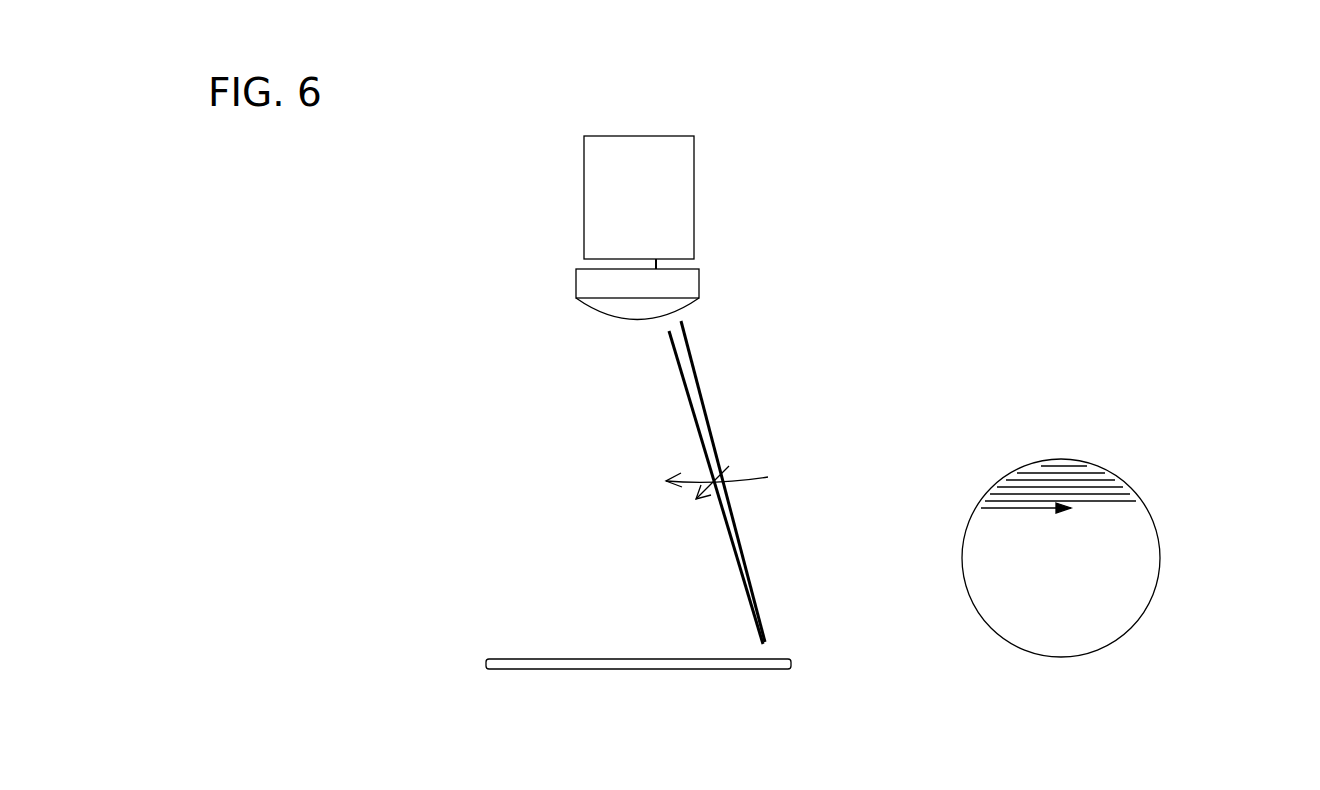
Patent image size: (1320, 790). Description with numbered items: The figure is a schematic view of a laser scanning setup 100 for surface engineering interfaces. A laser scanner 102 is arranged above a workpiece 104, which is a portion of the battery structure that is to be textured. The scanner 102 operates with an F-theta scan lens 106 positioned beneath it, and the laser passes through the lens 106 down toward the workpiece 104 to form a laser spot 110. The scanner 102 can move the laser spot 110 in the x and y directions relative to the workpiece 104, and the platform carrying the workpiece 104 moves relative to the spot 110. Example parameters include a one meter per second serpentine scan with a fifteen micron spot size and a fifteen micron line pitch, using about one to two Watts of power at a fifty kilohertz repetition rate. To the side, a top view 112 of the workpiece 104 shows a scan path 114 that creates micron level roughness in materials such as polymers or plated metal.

The laser scanning setup 100 is at (399, 237).
The laser scanner 102 is at (652, 181).
The workpiece 104 is at (563, 658).
The F-theta scan lens 106 is at (683, 284).
The laser spot 110 is at (763, 642).
The top view 112 is at (1078, 443).
The scan path 114 is at (1032, 508).